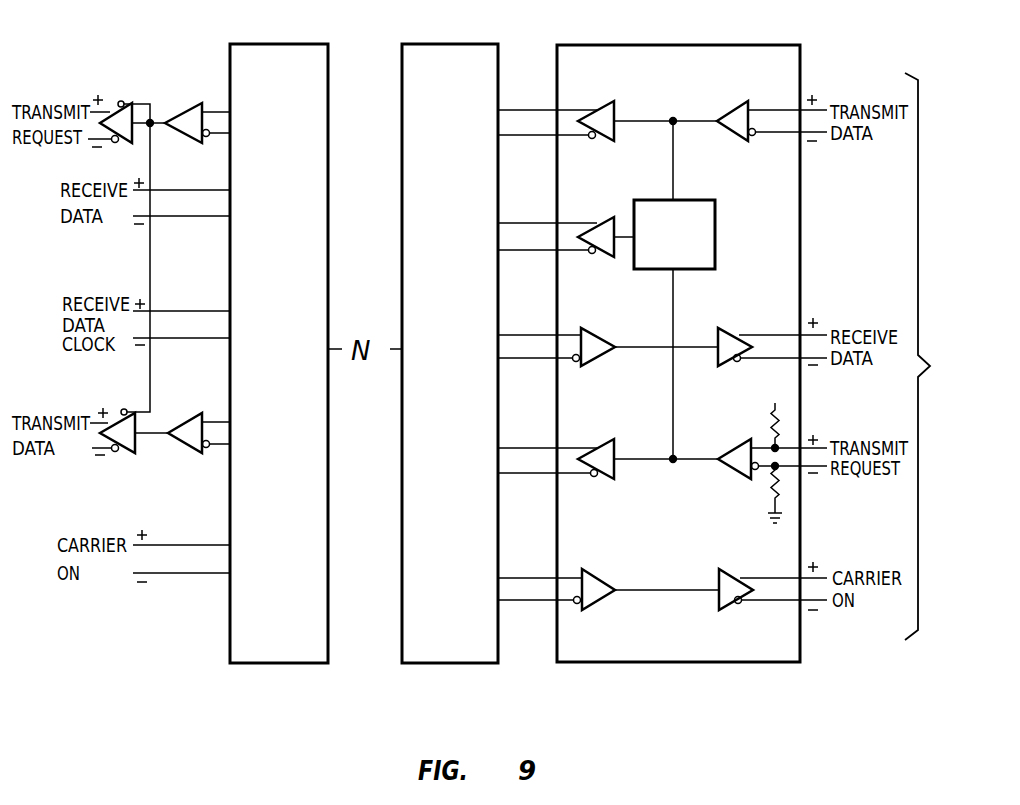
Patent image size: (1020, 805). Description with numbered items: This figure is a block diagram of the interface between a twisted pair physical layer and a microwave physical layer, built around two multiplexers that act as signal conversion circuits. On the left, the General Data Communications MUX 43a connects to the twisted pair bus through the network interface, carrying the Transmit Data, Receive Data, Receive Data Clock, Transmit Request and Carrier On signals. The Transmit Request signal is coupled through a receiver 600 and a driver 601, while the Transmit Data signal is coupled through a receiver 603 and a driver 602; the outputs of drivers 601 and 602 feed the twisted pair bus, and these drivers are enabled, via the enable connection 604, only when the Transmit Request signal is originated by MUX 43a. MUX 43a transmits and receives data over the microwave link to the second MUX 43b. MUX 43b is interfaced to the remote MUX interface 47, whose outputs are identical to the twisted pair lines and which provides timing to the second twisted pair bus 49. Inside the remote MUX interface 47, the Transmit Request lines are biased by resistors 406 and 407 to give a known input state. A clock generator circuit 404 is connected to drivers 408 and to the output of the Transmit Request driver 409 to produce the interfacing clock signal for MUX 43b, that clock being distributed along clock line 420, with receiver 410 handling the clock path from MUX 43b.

The time division multiplexer 43a is at (251, 44).
The second MUX 43b is at (429, 44).
The remote MUX interface 47 is at (647, 45).
The second twisted pair bus 49 is at (932, 368).
The clock generator circuit 404 is at (716, 226).
The resistor 406 is at (773, 430).
The resistor 407 is at (772, 486).
The drivers 408 is at (724, 472).
The Transmit Request- driver 409 is at (738, 105).
The clock receiver 410 is at (608, 216).
The clock line 420 is at (674, 421).
The receiver 600 is at (177, 104).
The driver 601 is at (136, 106).
The driver 602 is at (138, 453).
The receiver 603 is at (191, 453).
The enable line 604 is at (151, 377).